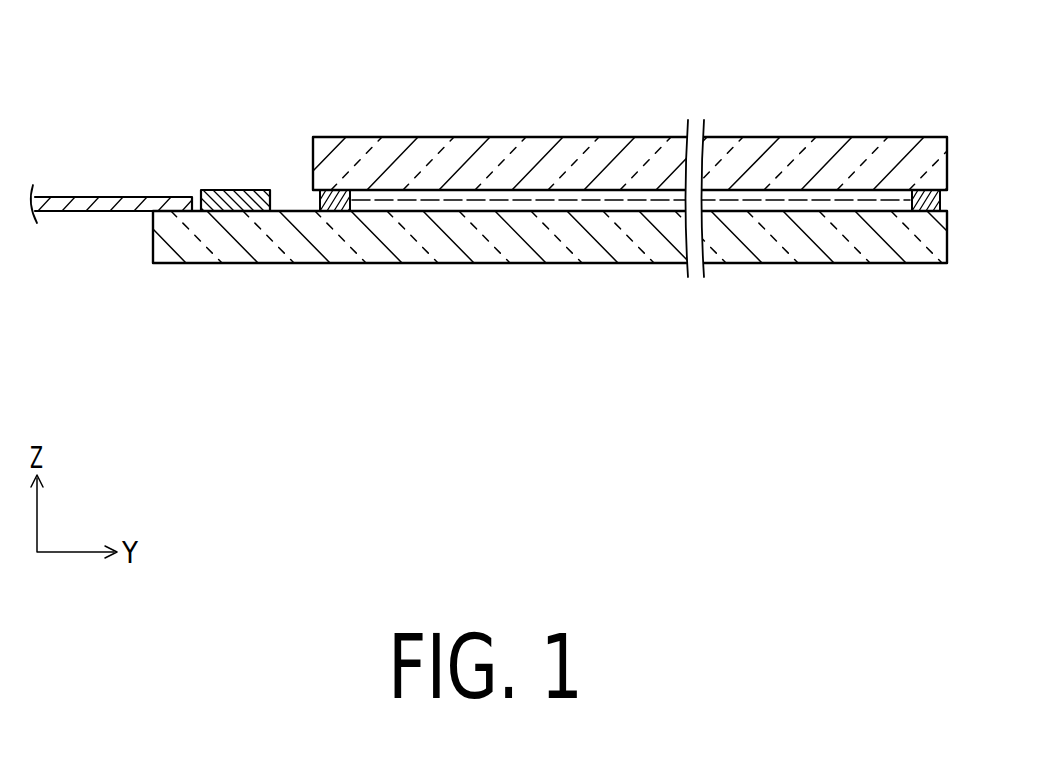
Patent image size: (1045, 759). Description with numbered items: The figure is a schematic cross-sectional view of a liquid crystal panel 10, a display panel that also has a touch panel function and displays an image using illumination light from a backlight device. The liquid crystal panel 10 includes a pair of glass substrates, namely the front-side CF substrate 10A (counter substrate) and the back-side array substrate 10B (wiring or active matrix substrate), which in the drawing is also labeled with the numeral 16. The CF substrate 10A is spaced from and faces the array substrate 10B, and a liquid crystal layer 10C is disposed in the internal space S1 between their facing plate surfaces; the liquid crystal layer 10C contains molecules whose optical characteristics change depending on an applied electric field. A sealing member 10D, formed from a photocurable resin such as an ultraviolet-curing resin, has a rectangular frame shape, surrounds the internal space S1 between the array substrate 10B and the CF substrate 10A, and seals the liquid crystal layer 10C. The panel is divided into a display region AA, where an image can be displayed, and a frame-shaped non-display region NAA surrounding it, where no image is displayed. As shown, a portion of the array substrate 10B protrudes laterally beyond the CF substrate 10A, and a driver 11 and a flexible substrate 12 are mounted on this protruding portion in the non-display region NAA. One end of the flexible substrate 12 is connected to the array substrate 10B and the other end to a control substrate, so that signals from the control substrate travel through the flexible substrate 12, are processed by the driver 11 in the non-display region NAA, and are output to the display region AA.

The liquid crystal panel 10 is at (765, 137).
The CF substrate 10A is at (532, 150).
The array substrate 10B is at (447, 252).
The array substrate (glass substrate) 16 is at (550, 281).
The liquid crystal layer 10C is at (607, 200).
The sealing member 10D is at (336, 205).
The driver 11 is at (232, 190).
The flexible substrate 12 is at (93, 197).
The internal space S1 is at (522, 213).
The display region AA is at (397, 130).
The non-display region NAA is at (292, 200).